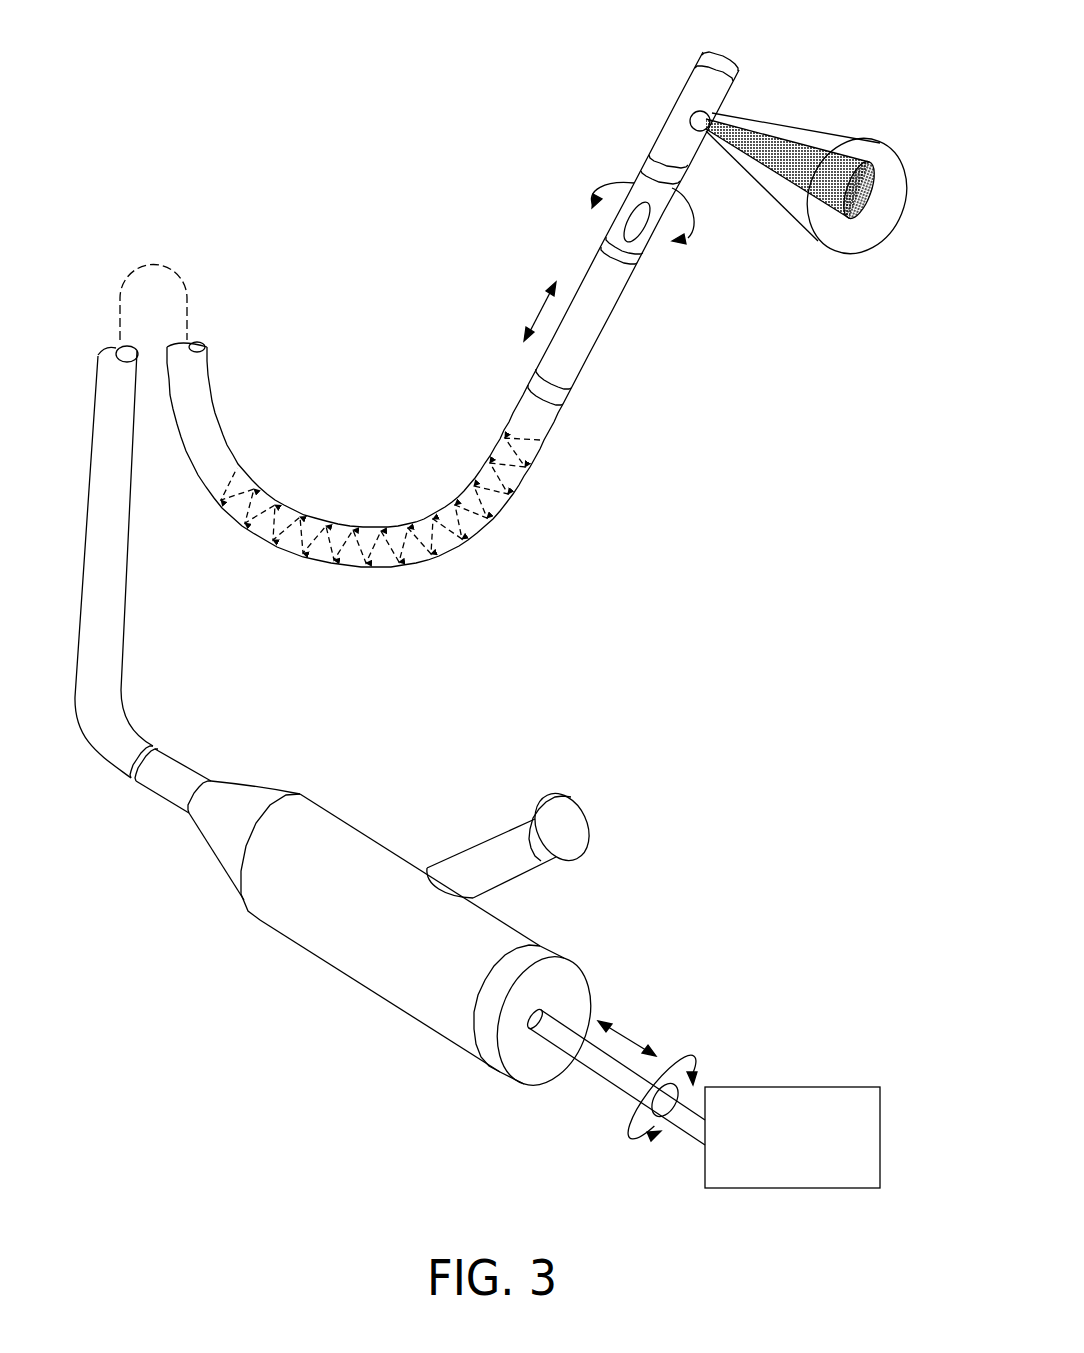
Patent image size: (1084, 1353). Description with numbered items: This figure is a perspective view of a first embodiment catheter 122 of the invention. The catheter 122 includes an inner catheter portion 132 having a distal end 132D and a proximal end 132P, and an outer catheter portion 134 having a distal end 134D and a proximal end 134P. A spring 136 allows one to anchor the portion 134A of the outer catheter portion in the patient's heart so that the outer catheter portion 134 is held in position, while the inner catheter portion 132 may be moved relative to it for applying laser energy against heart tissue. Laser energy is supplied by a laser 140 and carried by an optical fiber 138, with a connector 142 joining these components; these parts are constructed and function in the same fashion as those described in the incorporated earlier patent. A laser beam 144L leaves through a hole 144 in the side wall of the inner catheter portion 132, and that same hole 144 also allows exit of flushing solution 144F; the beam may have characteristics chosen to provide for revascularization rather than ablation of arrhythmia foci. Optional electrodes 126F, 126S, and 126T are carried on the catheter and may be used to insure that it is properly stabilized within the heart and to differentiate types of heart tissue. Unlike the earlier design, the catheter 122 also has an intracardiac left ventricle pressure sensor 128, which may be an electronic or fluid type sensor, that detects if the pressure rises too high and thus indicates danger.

The catheter 122 is at (730, 424).
The electrode 126F is at (700, 64).
The electrode 126S is at (648, 156).
The electrode 126T is at (571, 392).
The intracardiac left ventricle pressure sensor 128 is at (628, 232).
The inner catheter portion 132 is at (627, 282).
The distal end of inner catheter portion 132D is at (692, 116).
The proximal end of inner catheter portion 132P is at (172, 755).
The outer catheter portion 134 is at (551, 433).
The anchored portion of outer catheter portion 134A is at (310, 560).
The distal end of outer catheter portion 134D is at (560, 413).
The proximal end of outer catheter portion 134P is at (125, 708).
The spring 136 is at (310, 520).
The optical fiber 138 is at (705, 1088).
The laser 140 is at (766, 1088).
The connector 142 is at (380, 838).
The hole 144 is at (690, 122).
The laser beam 144L is at (777, 143).
The flushing solution 144F is at (798, 222).